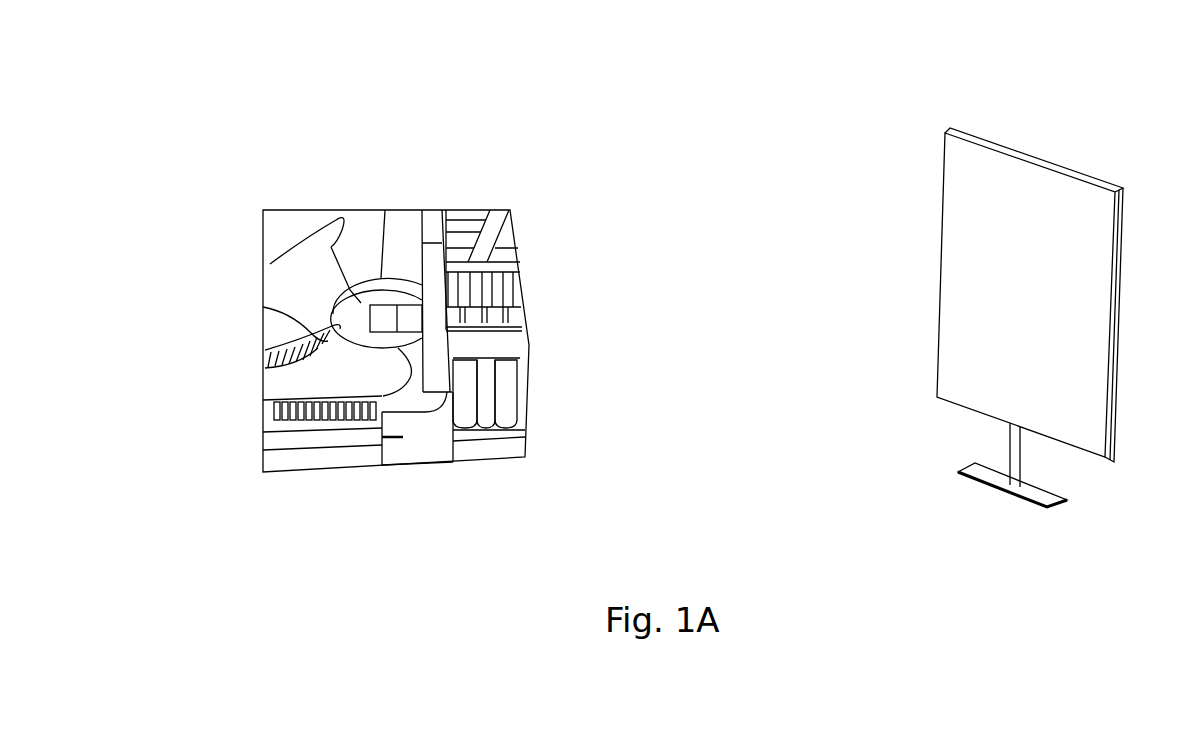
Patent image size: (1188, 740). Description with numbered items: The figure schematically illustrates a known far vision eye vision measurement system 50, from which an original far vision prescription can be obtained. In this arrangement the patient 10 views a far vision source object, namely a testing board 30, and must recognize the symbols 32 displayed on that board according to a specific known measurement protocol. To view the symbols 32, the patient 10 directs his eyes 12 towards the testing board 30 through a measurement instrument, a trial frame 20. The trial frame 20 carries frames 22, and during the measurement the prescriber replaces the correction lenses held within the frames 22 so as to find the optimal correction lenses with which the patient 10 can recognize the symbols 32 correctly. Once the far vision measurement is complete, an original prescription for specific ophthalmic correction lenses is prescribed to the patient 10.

The patient 10 is at (302, 232).
The eyes 12 is at (272, 368).
The trial frame 20 is at (431, 226).
The frames 22 is at (470, 412).
The testing board 30 is at (1092, 222).
The symbols 32 is at (1003, 192).
The FV eye vision measurement system 50 is at (735, 114).